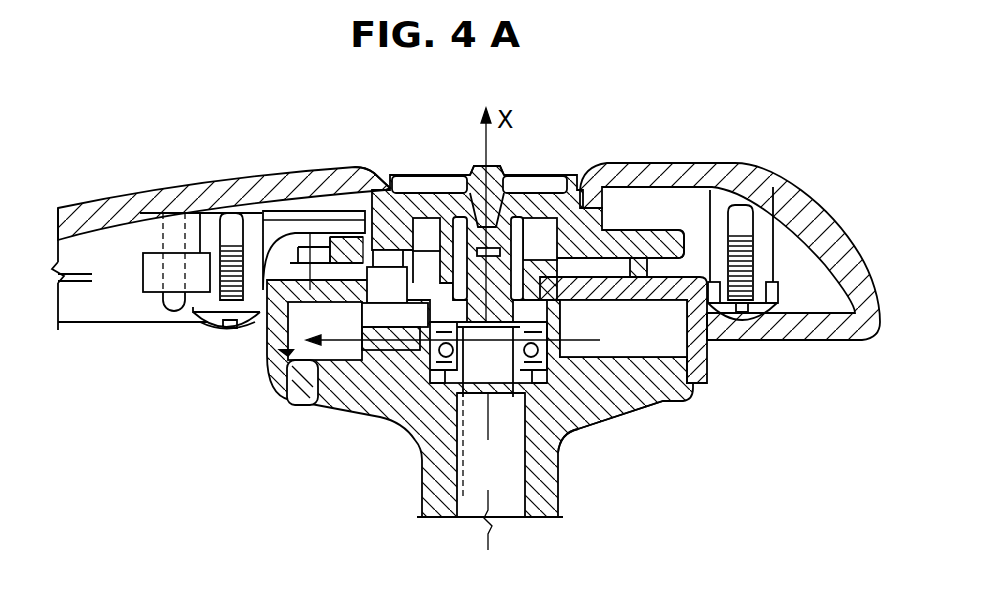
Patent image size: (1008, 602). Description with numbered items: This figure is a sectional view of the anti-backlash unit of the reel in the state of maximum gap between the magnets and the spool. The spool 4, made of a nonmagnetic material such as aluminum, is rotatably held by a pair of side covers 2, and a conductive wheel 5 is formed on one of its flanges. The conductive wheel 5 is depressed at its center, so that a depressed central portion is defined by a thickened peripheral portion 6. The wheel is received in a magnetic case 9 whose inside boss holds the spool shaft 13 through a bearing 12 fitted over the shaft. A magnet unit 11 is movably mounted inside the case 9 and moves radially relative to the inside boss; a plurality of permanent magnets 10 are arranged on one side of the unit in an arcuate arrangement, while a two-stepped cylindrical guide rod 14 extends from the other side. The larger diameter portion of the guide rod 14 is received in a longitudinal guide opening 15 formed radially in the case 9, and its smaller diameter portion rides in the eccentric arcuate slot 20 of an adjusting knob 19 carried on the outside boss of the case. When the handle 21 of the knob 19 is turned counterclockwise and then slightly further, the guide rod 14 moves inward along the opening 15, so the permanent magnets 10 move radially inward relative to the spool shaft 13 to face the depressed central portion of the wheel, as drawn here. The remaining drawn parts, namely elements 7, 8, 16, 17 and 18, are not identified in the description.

The side covers 2 is at (678, 164).
The spool 4 is at (422, 502).
The conductive wheel 5 is at (292, 404).
The thickened peripheral portion 6 is at (282, 386).
The screw 7 is at (768, 208).
The screw head 8 is at (760, 328).
The magnetic case 9 is at (268, 339).
The permanent magnets 10 is at (440, 358).
The magnet unit 11 is at (365, 352).
The bearing 12 is at (418, 422).
The spool shaft 13 is at (567, 432).
The two-stepped cylindrical guide rod 14 is at (409, 175).
The longitudinal guide opening 15 is at (300, 234).
The pin 16 is at (508, 212).
The pin 17 is at (491, 224).
The bar 18 is at (560, 196).
The adjusting knob 19 is at (388, 170).
The eccentric arcuate slot 20 is at (312, 290).
The handle 21 is at (470, 175).